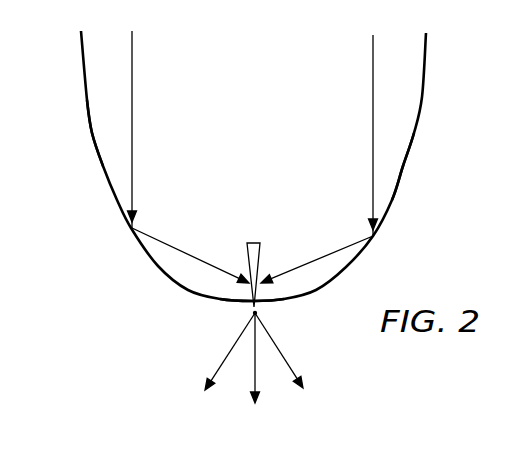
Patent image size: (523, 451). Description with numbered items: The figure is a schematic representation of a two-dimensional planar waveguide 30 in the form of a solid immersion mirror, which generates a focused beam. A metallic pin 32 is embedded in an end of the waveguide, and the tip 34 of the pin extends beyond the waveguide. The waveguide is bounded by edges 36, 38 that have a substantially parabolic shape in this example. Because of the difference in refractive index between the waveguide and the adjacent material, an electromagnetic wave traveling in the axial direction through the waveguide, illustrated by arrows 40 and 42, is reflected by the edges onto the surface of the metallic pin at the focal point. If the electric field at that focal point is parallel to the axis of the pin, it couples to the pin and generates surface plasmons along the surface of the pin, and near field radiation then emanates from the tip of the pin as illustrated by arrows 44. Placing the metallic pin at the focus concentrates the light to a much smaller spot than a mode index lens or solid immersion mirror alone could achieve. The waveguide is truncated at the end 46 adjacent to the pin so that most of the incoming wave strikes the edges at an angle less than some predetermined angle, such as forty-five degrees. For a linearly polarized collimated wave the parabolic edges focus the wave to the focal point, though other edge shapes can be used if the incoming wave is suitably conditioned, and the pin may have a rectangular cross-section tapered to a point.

The two-dimensional waveguide 30 is at (396, 50).
The metallic pin 32 is at (257, 252).
The tip 34 is at (258, 313).
The edge 36 is at (412, 156).
The edge 38 is at (92, 134).
The arrow 40 is at (372, 101).
The arrow 42 is at (134, 81).
The arrows 44 is at (221, 366).
The end 46 is at (233, 305).